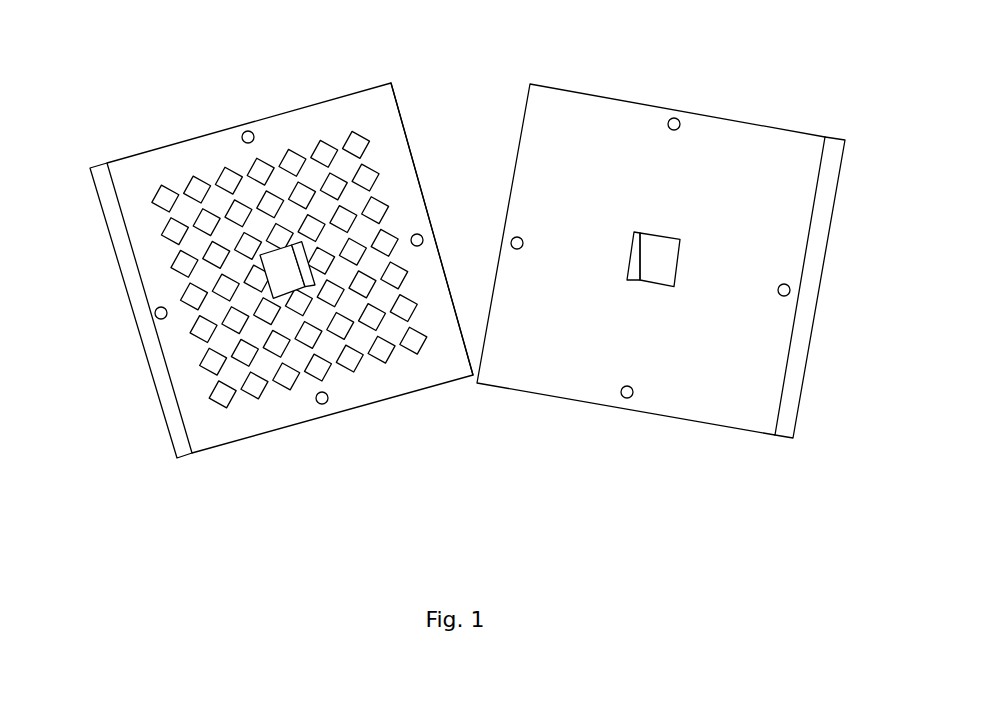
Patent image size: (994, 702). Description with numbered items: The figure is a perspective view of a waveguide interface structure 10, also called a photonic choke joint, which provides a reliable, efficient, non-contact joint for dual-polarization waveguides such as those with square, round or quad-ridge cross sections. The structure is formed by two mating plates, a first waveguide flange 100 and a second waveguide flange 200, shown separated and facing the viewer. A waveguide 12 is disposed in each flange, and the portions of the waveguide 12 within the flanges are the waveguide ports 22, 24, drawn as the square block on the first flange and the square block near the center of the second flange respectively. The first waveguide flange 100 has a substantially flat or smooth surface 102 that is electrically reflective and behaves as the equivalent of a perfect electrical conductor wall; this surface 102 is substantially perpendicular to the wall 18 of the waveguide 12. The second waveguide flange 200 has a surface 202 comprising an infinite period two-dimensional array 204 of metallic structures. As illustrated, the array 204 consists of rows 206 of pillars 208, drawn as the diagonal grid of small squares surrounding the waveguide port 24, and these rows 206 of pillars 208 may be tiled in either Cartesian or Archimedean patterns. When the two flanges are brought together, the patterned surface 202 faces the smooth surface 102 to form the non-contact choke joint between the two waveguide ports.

The waveguide interface structure 10 is at (445, 82).
The waveguide 12 is at (282, 277).
The wall of the waveguide 18 is at (305, 270).
The waveguide port 22 is at (655, 267).
The waveguide port 24 is at (290, 247).
The first waveguide flange 100 is at (643, 67).
The surface 102 is at (715, 113).
The second waveguide flange 200 is at (238, 90).
The surface 202 is at (200, 140).
The two-dimensional array 204 is at (308, 150).
The rows 206 is at (443, 333).
The pillars 208 is at (351, 358).